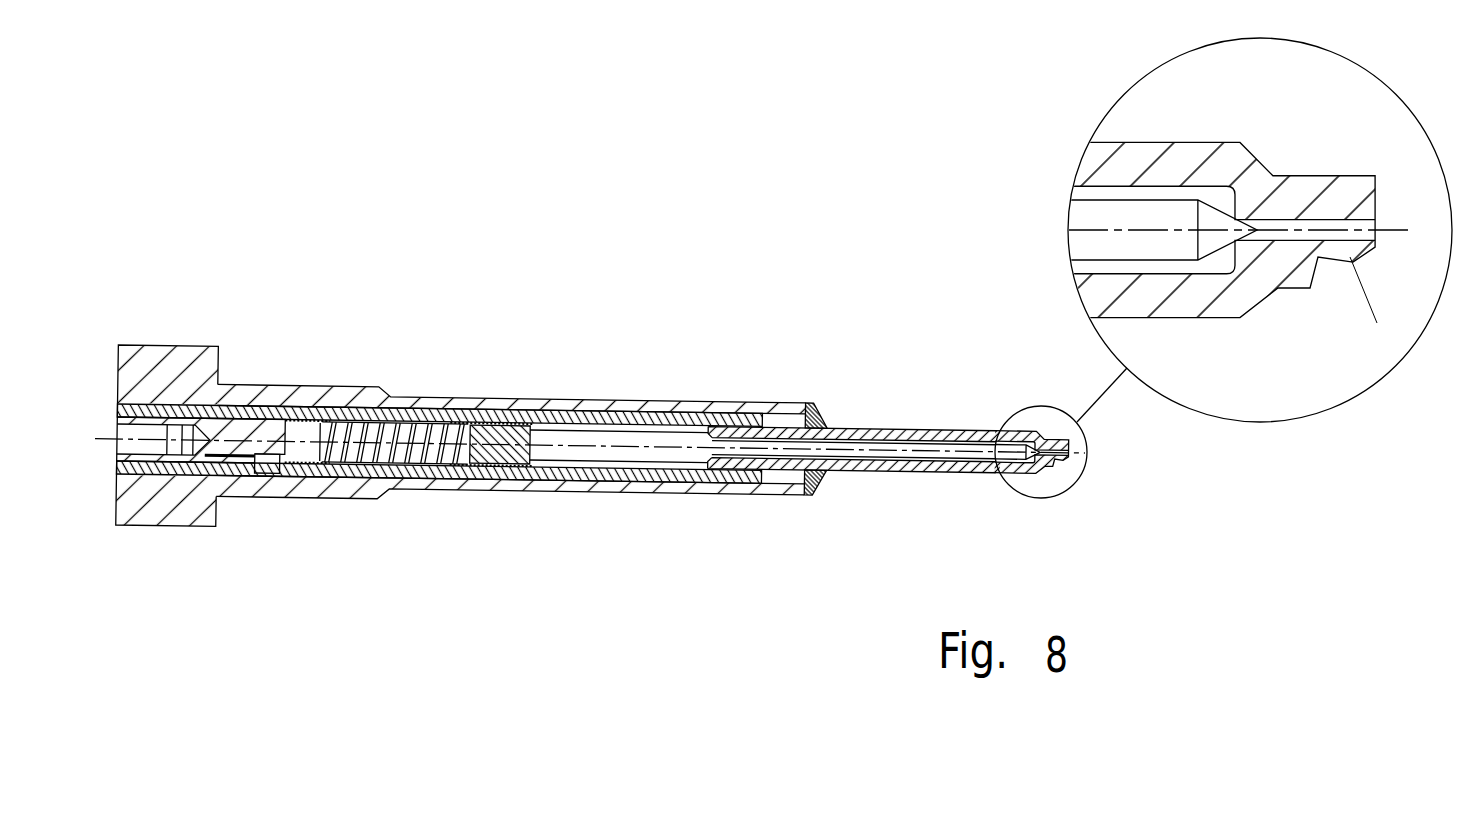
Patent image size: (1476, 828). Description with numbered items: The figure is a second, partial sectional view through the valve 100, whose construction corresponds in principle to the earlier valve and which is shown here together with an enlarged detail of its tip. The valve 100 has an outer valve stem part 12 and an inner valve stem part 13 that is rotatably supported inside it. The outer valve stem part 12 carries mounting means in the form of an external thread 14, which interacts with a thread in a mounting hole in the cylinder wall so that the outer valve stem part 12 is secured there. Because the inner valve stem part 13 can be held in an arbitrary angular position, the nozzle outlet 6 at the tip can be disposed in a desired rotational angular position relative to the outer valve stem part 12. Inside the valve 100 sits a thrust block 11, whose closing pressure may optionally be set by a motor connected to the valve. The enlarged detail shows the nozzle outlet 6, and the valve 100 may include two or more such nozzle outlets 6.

The valve 100 is at (611, 481).
The outer valve stem part 12 is at (167, 352).
The external thread 14 is at (348, 387).
The inner valve stem part 13 is at (662, 424).
The thrust block 11 is at (503, 493).
The nozzle outlet 6 is at (1355, 262).